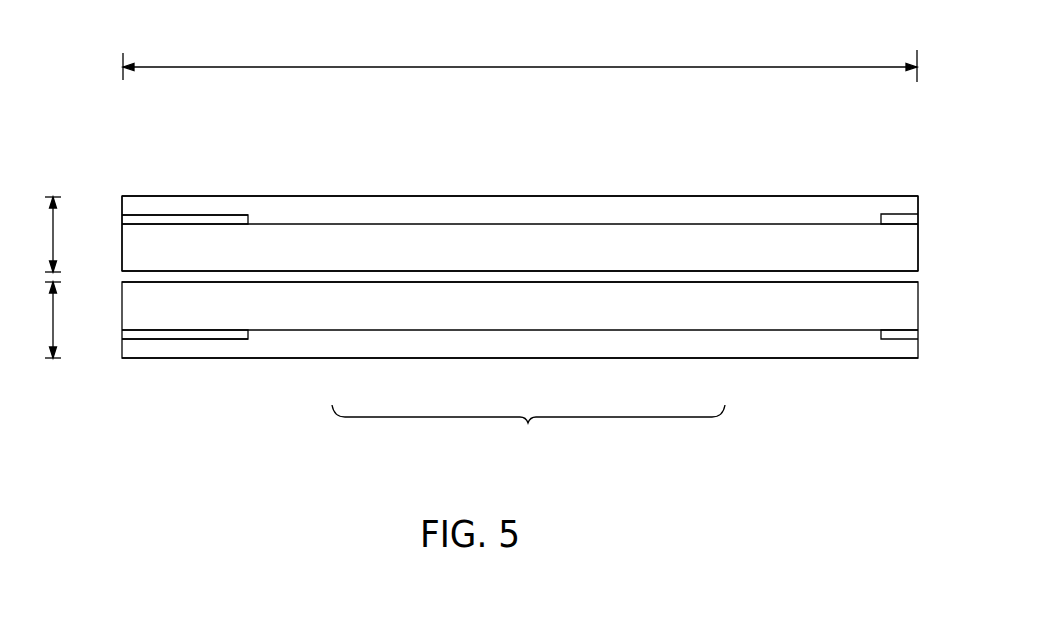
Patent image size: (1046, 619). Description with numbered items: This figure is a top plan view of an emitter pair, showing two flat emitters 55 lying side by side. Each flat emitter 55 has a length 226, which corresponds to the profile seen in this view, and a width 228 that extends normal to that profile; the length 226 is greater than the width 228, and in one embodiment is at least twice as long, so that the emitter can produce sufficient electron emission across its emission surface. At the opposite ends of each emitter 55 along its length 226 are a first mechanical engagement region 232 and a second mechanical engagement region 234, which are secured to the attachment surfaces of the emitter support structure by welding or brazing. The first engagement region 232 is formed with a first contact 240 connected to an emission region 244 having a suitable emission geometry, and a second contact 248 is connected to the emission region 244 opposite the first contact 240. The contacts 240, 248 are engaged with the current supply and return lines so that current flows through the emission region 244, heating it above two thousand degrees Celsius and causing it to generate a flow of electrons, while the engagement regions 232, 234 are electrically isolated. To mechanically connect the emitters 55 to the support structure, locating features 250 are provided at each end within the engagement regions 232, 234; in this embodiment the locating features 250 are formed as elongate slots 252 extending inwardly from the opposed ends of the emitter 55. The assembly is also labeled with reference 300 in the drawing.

The flat emitter 55 is at (370, 432).
The length 226 is at (410, 63).
The width 228 is at (53, 224).
The first mechanical engagement region 232 is at (189, 193).
The second mechanical engagement region 234 is at (913, 188).
The first contact 240 is at (152, 196).
The emission region 244 is at (528, 428).
The second contact 248 is at (895, 213).
The locating feature 250 is at (158, 236).
The elongate slot 252 is at (231, 214).
The assembly 300 is at (802, 170).